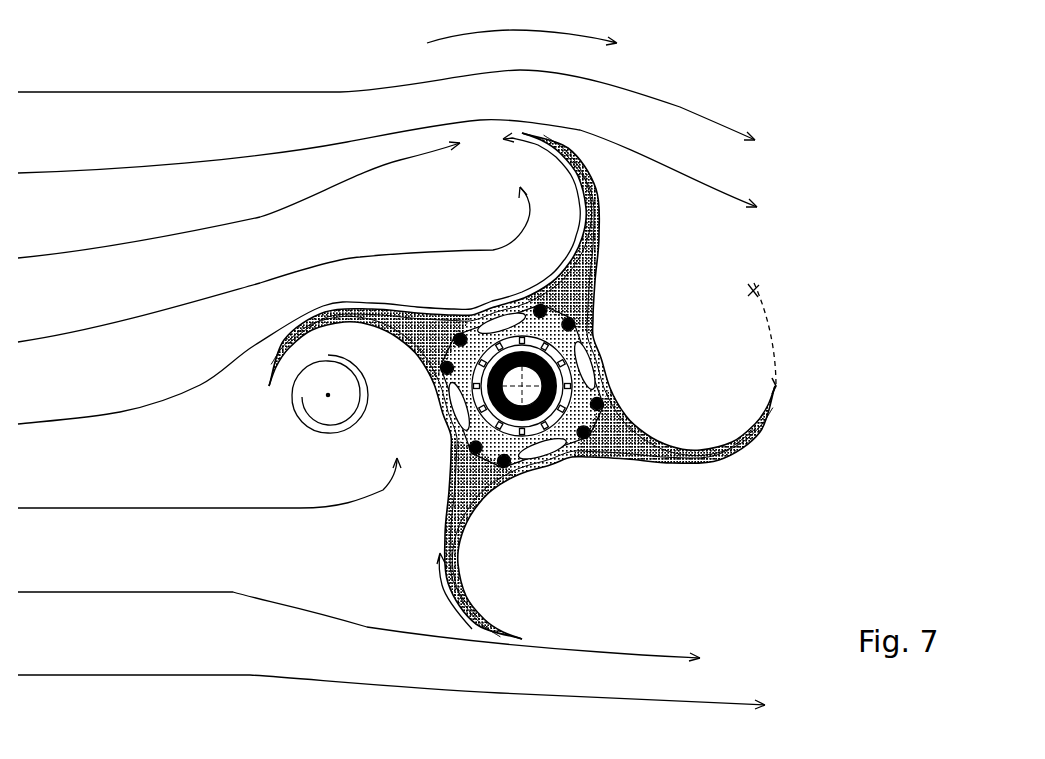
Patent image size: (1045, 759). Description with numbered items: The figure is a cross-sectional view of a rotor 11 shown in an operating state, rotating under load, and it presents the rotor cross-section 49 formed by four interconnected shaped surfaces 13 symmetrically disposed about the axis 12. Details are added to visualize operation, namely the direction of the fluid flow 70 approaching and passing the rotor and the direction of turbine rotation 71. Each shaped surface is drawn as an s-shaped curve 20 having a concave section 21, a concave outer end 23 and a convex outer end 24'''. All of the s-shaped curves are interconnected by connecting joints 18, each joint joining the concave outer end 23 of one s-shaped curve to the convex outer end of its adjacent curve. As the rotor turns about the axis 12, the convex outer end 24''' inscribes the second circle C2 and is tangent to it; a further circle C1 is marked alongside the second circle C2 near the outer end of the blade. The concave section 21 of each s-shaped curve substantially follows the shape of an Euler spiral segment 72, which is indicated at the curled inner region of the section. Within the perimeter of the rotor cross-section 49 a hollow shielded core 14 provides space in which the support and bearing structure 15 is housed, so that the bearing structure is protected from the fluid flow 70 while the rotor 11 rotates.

The rotor 11 is at (566, 388).
The axis 12 is at (673, 425).
The shaped surfaces 13 is at (522, 386).
The hollow shielded core 14 is at (568, 441).
The support and bearing structure 15 is at (466, 480).
The connecting joint 18 is at (709, 303).
The s-shaped curve 20 is at (598, 386).
The concave section 21 is at (648, 291).
The concave outer end 23 is at (616, 512).
The convex outer end 24''' is at (818, 410).
The rotor cross-section 49 is at (603, 536).
The fluid flow 70 is at (65, 645).
The turbine rotation 71 is at (480, 35).
The Euler spiral segment 72 is at (287, 430).
The tip circle C1 is at (748, 287).
The second circle C2 is at (755, 291).